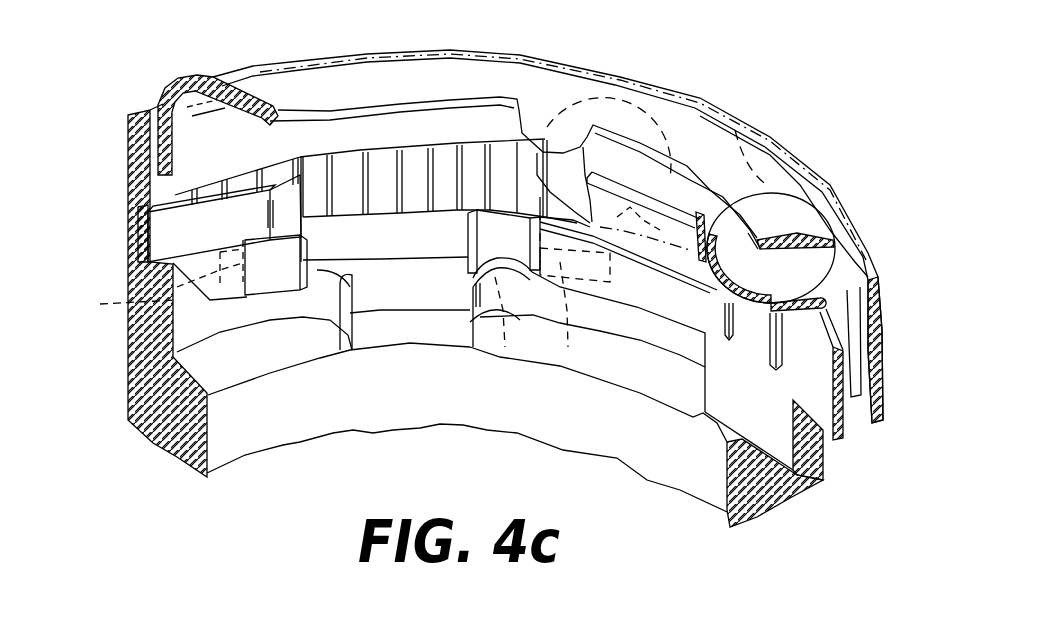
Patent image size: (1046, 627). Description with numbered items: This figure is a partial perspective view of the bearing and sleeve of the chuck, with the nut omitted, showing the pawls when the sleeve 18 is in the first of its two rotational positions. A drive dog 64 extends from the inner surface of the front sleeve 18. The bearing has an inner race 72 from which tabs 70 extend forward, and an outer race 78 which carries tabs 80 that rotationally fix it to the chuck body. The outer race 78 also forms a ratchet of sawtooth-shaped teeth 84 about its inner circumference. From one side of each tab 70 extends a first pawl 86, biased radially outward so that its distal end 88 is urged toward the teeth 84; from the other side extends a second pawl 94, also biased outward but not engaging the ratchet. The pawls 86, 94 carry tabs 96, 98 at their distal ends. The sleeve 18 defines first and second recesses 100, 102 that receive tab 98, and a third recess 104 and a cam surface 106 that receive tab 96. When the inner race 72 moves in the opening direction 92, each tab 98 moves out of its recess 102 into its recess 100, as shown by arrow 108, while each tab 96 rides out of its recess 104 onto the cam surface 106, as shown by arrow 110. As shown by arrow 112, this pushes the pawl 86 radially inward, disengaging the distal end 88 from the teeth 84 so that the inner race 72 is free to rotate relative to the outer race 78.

The front sleeve 18 is at (128, 367).
The drive dog 64 is at (330, 322).
The tab 70 is at (713, 418).
The inner race 72 is at (657, 200).
The outer race 78 is at (610, 67).
The tab 80 is at (513, 133).
The sawtooth-shaped tooth 84 is at (423, 140).
The first pawl 86 is at (143, 210).
The distal end 88 is at (303, 207).
The opening direction 92 is at (340, 188).
The second pawl 94 is at (640, 307).
The tab 96 is at (353, 317).
The tab 98 is at (467, 272).
The first recess 100 is at (502, 355).
The second recess 102 is at (567, 363).
The third recess 104 is at (357, 232).
The cam surface 106 is at (111, 307).
The arrow 108 is at (513, 277).
The arrow 110 is at (280, 283).
The arrow 112 is at (293, 140).